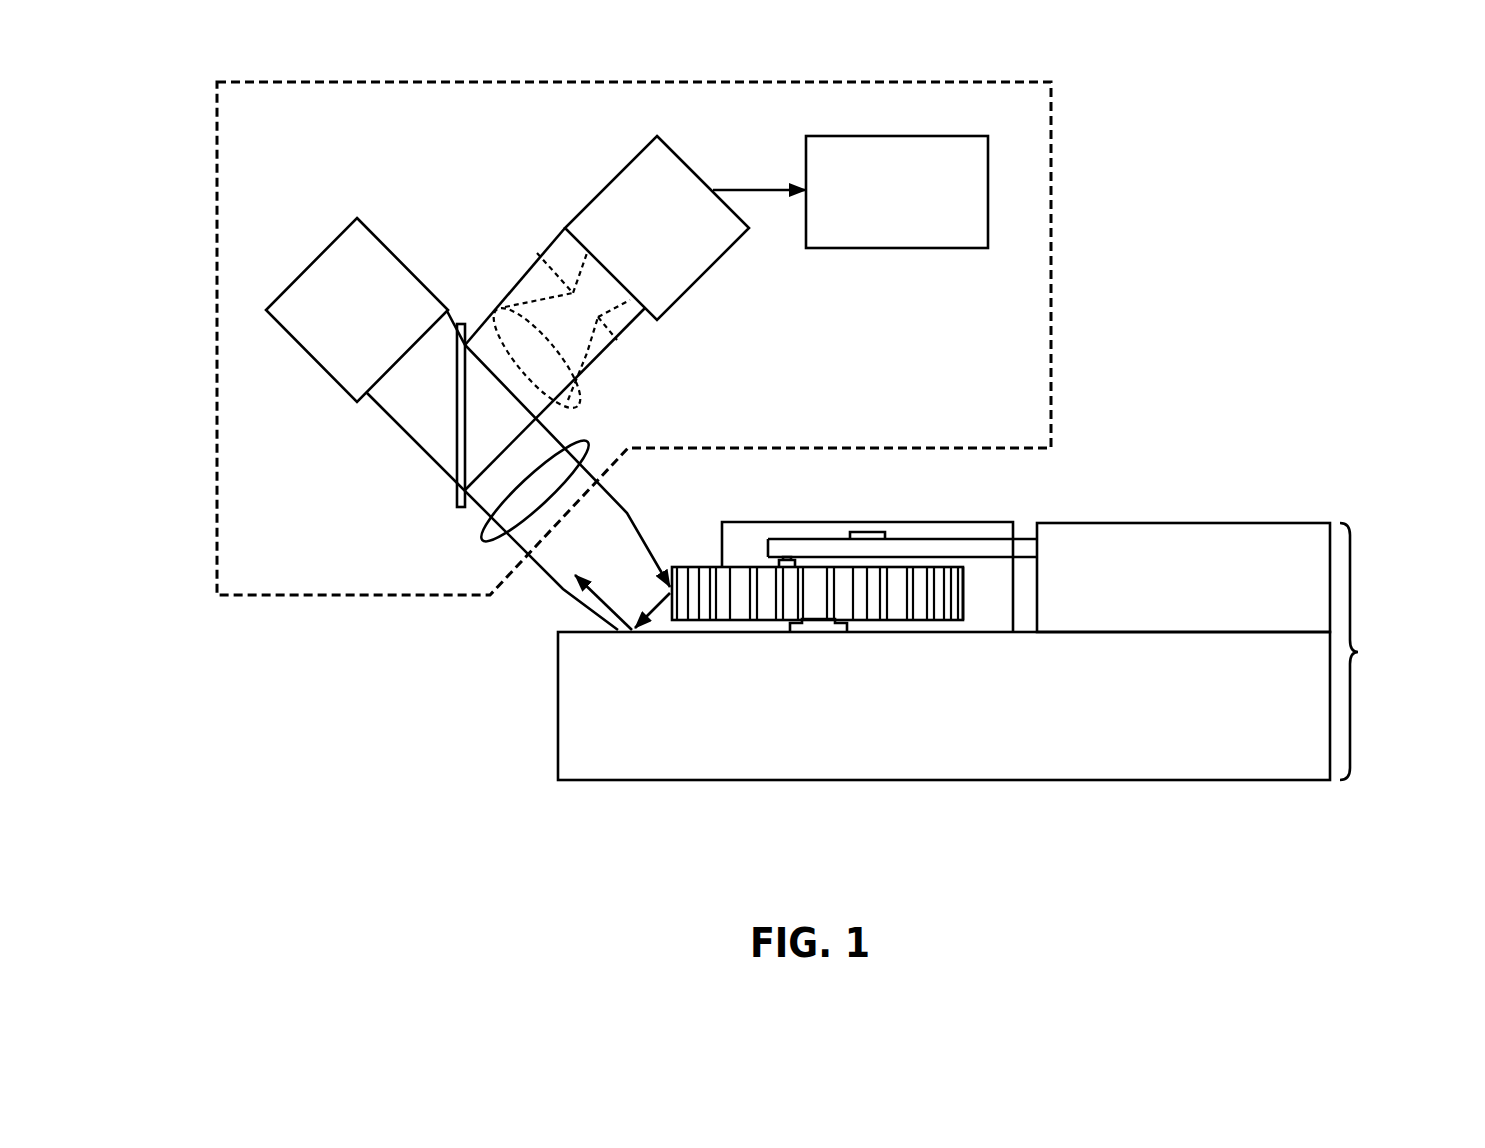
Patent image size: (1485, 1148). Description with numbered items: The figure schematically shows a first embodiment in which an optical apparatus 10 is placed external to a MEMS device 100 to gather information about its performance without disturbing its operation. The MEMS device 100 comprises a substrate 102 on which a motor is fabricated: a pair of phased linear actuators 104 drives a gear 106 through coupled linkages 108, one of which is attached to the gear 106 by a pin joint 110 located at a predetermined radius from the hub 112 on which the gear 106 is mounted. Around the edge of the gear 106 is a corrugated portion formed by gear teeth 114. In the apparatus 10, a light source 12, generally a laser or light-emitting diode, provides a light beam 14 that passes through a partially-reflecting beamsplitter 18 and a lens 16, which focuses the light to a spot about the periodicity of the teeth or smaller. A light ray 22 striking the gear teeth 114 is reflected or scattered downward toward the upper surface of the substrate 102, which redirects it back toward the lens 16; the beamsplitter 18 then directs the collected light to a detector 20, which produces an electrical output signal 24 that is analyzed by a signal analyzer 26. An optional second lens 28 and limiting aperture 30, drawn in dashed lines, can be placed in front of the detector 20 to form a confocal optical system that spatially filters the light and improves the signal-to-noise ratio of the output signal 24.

The optical apparatus 10 is at (295, 597).
The light source 12 is at (340, 357).
The light beam 14 is at (398, 430).
The lens 16 is at (577, 448).
The partially-reflecting beamsplitter 18 is at (453, 503).
The detector 20 is at (671, 262).
The light ray 22 is at (615, 530).
The electrical output signal 24 is at (760, 188).
The signal analyzer 26 is at (880, 231).
The second lens 28 is at (477, 307).
The limiting aperture 30 is at (628, 342).
The MEMS device 100 is at (1396, 651).
The substrate 102 is at (1297, 750).
The phased linear actuators 104 is at (1067, 522).
The gear 106 is at (690, 567).
The linkages 108 is at (867, 532).
The pin joint 110 is at (778, 563).
The hub 112 is at (818, 628).
The gear teeth 114 is at (963, 600).